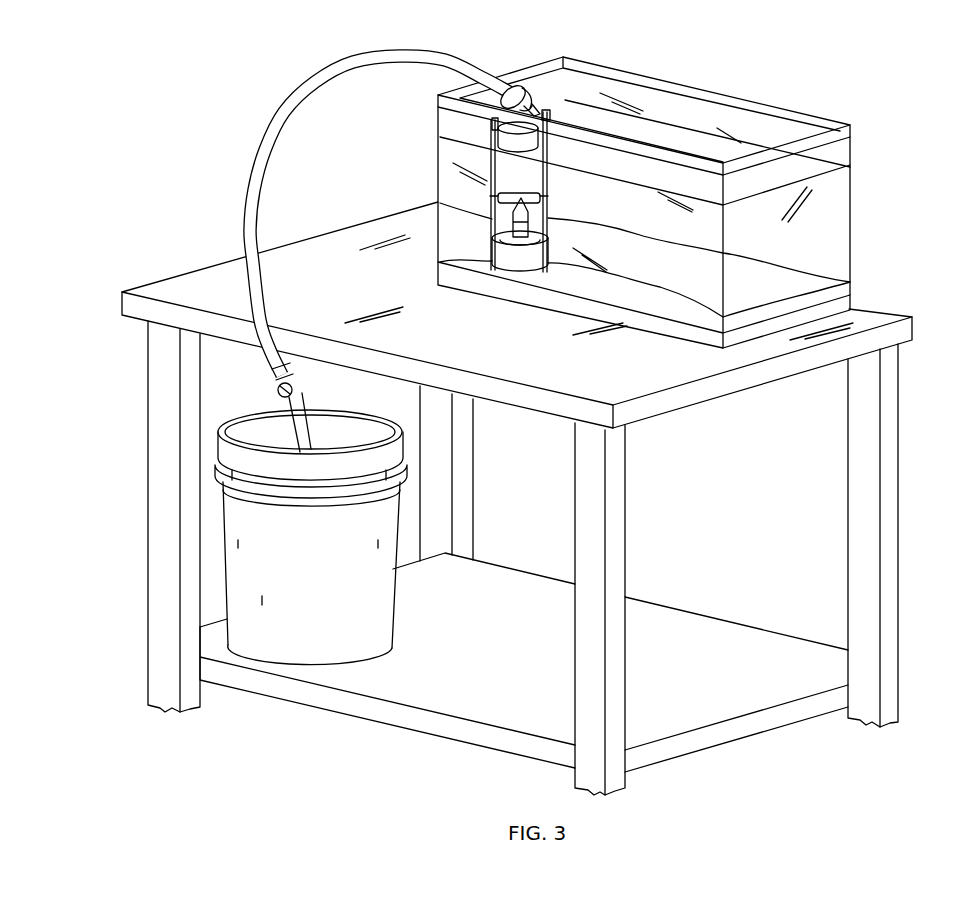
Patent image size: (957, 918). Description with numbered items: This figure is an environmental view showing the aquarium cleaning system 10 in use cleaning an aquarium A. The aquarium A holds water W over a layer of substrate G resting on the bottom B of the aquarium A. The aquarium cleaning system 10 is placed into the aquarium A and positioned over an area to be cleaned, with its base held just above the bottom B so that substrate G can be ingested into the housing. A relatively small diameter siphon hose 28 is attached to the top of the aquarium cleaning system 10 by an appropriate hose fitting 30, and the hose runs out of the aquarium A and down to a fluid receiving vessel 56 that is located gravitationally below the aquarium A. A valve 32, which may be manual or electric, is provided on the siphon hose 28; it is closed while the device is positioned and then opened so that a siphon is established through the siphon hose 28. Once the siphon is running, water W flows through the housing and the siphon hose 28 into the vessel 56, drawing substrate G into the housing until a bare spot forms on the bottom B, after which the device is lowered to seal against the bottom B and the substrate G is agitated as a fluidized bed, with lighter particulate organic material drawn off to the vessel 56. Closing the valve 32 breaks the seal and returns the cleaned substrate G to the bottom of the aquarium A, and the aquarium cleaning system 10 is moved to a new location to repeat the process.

The aquarium cleaning system 10 is at (465, 195).
The siphon hose 28 is at (240, 212).
The hose fitting 30 is at (512, 88).
The valve 32 is at (277, 389).
The fluid receiving vessel 56 is at (298, 620).
The aquarium A is at (880, 210).
The water W is at (674, 137).
The substrate G is at (849, 297).
The bottom of the aquarium B is at (738, 337).